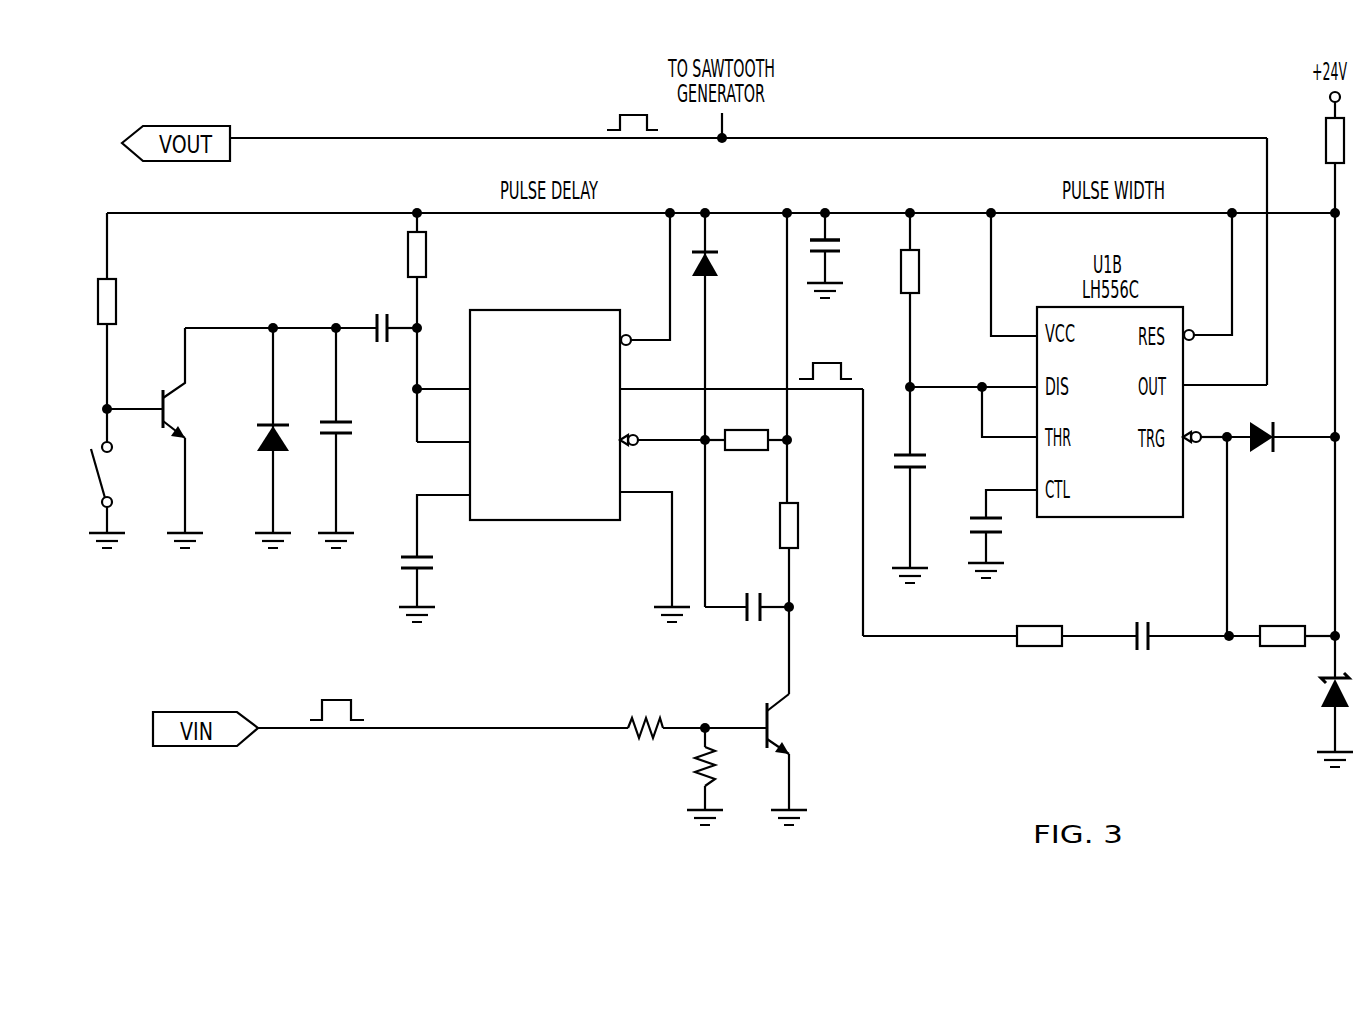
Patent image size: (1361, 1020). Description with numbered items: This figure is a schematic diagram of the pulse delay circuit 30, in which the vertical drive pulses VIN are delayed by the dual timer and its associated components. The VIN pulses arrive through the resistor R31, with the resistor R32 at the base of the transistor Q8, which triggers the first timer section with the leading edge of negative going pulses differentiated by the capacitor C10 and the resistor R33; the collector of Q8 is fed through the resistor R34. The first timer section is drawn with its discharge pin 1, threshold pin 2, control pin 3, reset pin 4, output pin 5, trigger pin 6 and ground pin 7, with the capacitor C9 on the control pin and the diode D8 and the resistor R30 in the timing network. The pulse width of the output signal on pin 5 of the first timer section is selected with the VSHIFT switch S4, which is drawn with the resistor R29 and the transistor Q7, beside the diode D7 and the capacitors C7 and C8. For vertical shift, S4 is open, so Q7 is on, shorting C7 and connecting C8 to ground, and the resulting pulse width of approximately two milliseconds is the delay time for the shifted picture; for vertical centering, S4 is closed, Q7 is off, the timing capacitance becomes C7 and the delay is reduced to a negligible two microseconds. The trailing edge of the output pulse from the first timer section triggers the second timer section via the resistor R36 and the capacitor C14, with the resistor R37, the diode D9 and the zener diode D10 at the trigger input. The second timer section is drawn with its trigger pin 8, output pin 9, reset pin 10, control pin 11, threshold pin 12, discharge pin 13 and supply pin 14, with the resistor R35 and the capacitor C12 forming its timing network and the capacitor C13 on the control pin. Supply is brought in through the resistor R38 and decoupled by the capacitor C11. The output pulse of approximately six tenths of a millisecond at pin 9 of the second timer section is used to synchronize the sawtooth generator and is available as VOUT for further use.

The pulse delay circuit 30 is at (545, 412).
The resistor R29 is at (127, 302).
The VSHIFT switch S4 is at (116, 474).
The transistor Q7 is at (172, 383).
The diode D7 is at (273, 457).
The capacitor C7 is at (358, 430).
The capacitor C8 is at (382, 298).
The resistor R30 is at (434, 268).
The capacitor C9 is at (434, 575).
The diode D8 is at (736, 326).
The resistor R33 is at (746, 440).
The resistor R34 is at (771, 524).
The capacitor C10 is at (747, 607).
The resistor R31 is at (645, 700).
The resistor R32 is at (687, 769).
The transistor Q8 is at (772, 724).
The capacitor C11 is at (847, 248).
The resistor R35 is at (928, 300).
The capacitor C12 is at (929, 477).
The capacitor C13 is at (967, 532).
The diode D9 is at (1281, 440).
The resistor R36 is at (1039, 609).
The capacitor C14 is at (1142, 606).
The resistor R37 is at (1297, 609).
The resistor R38 is at (1318, 157).
The diode D10 is at (1318, 706).
The pin 1 of U1A 1 is at (443, 373).
The pin 2 of U1A 2 is at (443, 426).
The pin 3 of U1A 3 is at (443, 511).
The pin 4 of U1A 4 is at (648, 276).
The pin 5 of U1A 5 is at (741, 374).
The pin 6 of U1A 6 is at (662, 427).
The pin 7 of U1A 7 is at (646, 536).
The pin 8 of U1B 8 is at (1205, 425).
The pin 9 of U1B 9 is at (1225, 370).
The pin 10 of U1B 10 is at (1210, 274).
The pin 11 of U1B 11 is at (1011, 488).
The pin 12 of U1B 12 is at (1009, 412).
The pin 13 of U1B 13 is at (973, 371).
The pin 14 of U1B 14 is at (1011, 272).